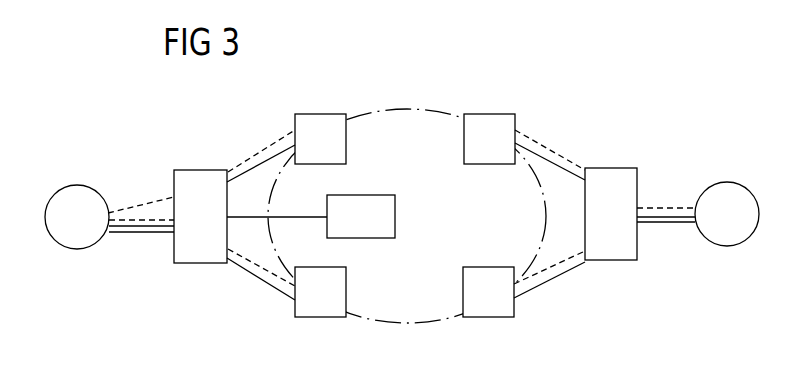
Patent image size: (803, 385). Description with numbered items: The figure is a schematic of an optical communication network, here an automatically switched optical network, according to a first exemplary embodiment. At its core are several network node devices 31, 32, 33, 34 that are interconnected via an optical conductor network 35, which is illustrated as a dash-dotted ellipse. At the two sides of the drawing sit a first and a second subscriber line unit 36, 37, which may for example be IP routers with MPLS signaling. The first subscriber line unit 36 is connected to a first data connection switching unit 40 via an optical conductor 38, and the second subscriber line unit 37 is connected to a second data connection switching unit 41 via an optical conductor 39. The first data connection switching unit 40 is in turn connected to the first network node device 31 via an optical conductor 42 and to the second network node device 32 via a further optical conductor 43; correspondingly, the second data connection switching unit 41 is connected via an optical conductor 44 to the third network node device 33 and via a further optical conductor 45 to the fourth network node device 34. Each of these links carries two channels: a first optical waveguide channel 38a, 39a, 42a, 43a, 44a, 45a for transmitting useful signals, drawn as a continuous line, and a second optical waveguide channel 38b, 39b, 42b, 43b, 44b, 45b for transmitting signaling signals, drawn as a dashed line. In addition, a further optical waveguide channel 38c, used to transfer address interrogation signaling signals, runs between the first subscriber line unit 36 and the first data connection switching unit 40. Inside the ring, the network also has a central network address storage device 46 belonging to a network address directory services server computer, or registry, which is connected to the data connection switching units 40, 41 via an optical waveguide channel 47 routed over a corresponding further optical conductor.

The network node device 31 is at (323, 113).
The network node device 32 is at (318, 318).
The network node device 33 is at (490, 113).
The network node device 34 is at (490, 318).
The optical conductor network 35 is at (410, 100).
The subscriber line unit 36 is at (75, 250).
The subscriber line unit 37 is at (730, 247).
The optical conductor 38 is at (133, 197).
The first optical waveguide channel 38a is at (137, 233).
The second optical waveguide channel 38b is at (118, 216).
The further optical waveguide channel 38c is at (163, 197).
The optical conductor 39 is at (678, 203).
The first optical waveguide channel 39a is at (660, 224).
The second optical waveguide channel 39b is at (665, 205).
The data connection switching unit 40 is at (190, 264).
The data connection switching unit 41 is at (620, 261).
The optical conductor 42 is at (248, 137).
The first optical waveguide channel 42a is at (243, 173).
The second optical waveguide channel 42b is at (280, 138).
The optical conductor 43 is at (249, 302).
The first optical waveguide channel 43a is at (282, 297).
The second optical waveguide channel 43b is at (240, 265).
The optical conductor 44 is at (561, 128).
The first optical waveguide channel 44a is at (566, 166).
The second optical waveguide channel 44b is at (530, 134).
The optical conductor 45 is at (557, 302).
The first optical waveguide channel 45a is at (527, 298).
The second optical waveguide channel 45b is at (570, 262).
The central network address storage device 46 is at (396, 212).
The optical waveguide channel 47 is at (292, 218).